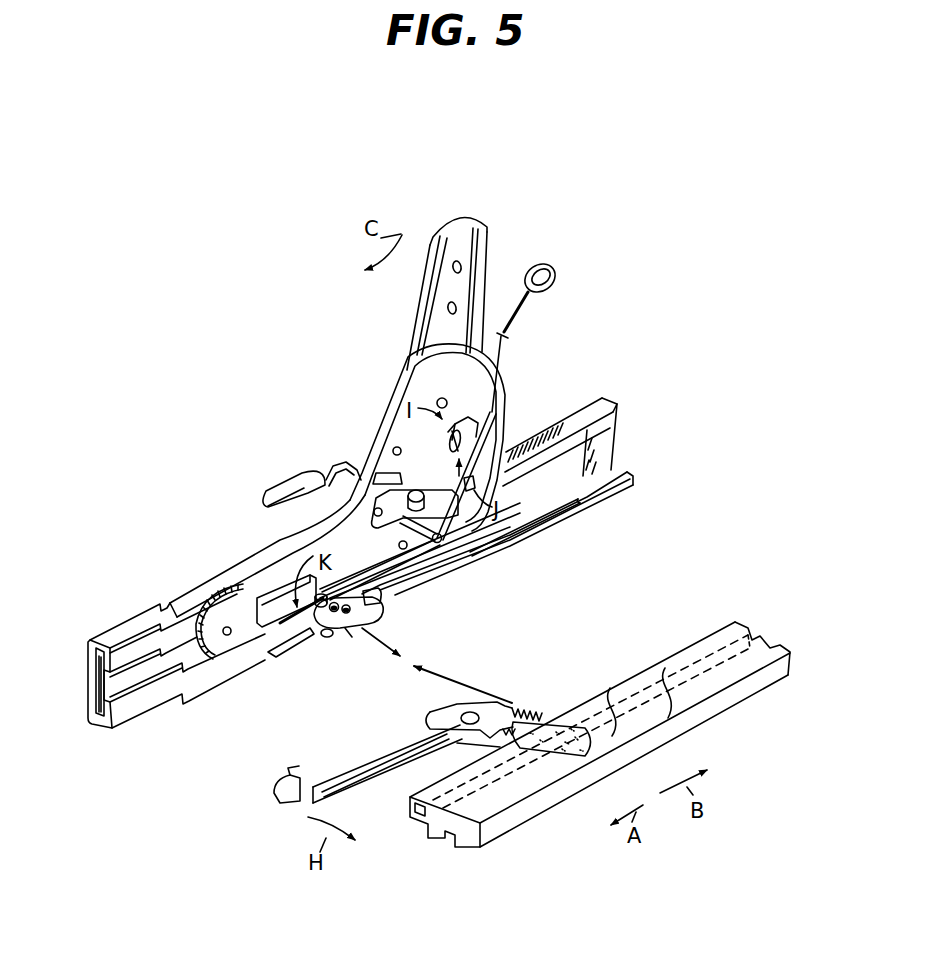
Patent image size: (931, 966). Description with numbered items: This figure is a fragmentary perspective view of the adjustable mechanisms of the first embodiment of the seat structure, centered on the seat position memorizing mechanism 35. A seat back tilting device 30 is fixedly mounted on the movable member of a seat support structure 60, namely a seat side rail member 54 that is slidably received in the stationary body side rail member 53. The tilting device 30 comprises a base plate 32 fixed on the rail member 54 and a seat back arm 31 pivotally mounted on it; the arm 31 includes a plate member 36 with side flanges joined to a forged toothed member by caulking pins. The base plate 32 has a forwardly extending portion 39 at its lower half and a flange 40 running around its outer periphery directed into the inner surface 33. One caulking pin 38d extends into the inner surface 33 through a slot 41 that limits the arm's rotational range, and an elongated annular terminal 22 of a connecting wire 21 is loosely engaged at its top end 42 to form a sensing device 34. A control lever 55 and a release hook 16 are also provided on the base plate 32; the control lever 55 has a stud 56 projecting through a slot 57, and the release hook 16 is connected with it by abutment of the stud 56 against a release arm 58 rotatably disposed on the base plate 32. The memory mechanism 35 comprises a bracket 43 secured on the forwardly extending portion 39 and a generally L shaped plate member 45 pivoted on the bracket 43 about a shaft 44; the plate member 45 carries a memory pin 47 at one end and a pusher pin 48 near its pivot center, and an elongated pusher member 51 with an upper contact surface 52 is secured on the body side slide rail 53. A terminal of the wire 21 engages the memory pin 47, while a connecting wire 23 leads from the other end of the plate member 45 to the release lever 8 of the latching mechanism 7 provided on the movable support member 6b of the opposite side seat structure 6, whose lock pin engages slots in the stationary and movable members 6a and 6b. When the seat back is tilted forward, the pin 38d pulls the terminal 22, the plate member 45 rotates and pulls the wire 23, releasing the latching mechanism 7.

The seat support structure 6 is at (575, 753).
The stationary support member 6a is at (442, 838).
The movable support member 6b is at (407, 803).
The latching mechanism 7 is at (553, 701).
The release lever 8 is at (298, 804).
The release hook 16 is at (553, 274).
The connecting wire 21 is at (451, 473).
The elongated annular terminal 22 is at (449, 449).
The connecting wire 23 is at (440, 671).
The seat back tilting device 30 is at (364, 479).
The seat back arm 31 is at (458, 243).
The base plate 32 is at (509, 391).
The inner surface 33 is at (481, 553).
The sensing device 34 is at (478, 443).
The seat position memorizing mechanism 35 is at (328, 637).
The plate member 36 is at (462, 290).
The caulking pin 38d is at (536, 474).
The forwardly extending portion 39 is at (382, 596).
The flange 40 is at (312, 538).
The slot 41 is at (480, 420).
The top end 42 is at (444, 397).
The bracket 43 is at (277, 621).
The shaft 44 is at (363, 620).
The plate member 45 is at (345, 641).
The memory pin 47 is at (304, 643).
The pusher pin 48 is at (377, 618).
The elongated pusher member 51 is at (569, 523).
The upper contact surface 52 is at (537, 510).
The body side rail member 53 is at (89, 672).
The seat side rail member 54 is at (97, 696).
The control lever 55 is at (303, 480).
The stud 56 is at (380, 470).
The slot 57 is at (380, 514).
The release arm 58 is at (380, 554).
The seat support structure 60 is at (153, 645).